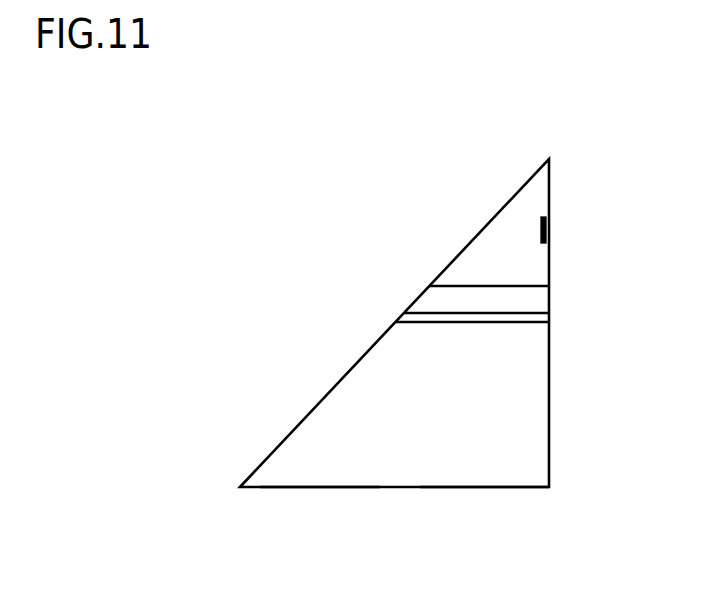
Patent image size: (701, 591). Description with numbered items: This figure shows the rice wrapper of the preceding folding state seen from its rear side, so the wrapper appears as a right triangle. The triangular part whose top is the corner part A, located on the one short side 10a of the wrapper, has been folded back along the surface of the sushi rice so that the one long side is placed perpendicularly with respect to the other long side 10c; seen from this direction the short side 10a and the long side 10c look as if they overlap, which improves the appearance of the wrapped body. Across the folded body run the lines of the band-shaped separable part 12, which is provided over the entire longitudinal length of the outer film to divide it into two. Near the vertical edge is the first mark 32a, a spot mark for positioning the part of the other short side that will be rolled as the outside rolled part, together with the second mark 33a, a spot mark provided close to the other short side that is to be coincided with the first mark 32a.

The one short side 10a is at (502, 487).
The other long side 10c is at (393, 487).
The corner part A is at (328, 460).
The separable part 12 is at (423, 313).
The first mark 32a is at (600, 209).
The second mark 33a is at (549, 228).